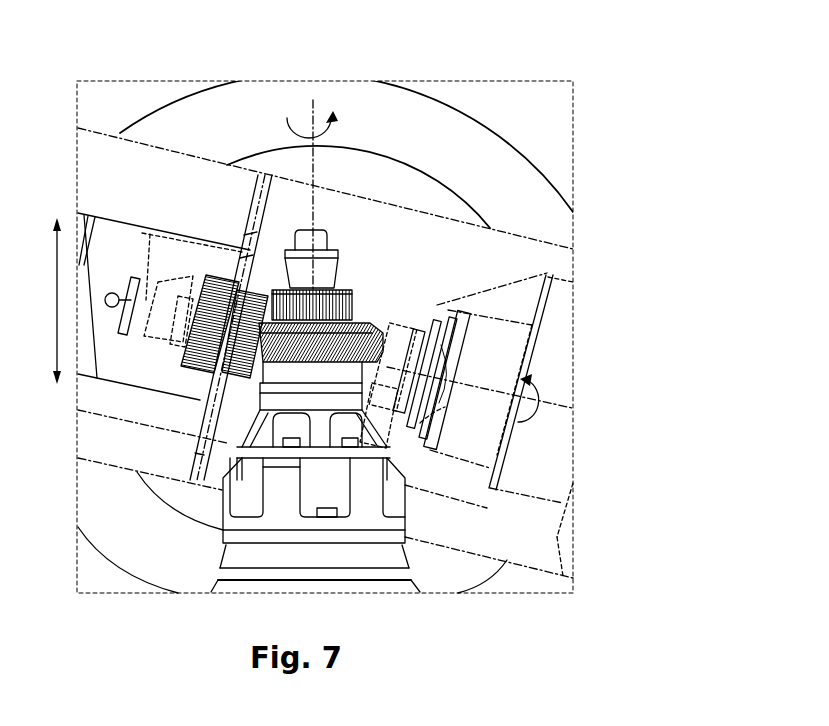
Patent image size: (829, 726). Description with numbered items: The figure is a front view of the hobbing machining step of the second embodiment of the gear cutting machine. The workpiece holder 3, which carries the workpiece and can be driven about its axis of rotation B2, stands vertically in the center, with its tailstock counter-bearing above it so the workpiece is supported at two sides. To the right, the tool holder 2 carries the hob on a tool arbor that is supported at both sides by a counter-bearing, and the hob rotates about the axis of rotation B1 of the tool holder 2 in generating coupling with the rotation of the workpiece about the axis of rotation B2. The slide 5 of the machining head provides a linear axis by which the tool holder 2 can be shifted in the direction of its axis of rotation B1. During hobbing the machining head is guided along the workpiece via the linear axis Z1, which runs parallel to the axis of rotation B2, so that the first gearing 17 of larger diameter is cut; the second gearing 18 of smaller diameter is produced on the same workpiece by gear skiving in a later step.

The second gearing 18 is at (327, 300).
The first gearing 17 is at (585, 497).
The workpiece holder 3 is at (323, 403).
The slide 5 is at (362, 213).
The tool holder 2 is at (435, 343).
The linear axis Z1 is at (36, 301).
The axis of rotation of the tool holder B1 is at (545, 411).
The axis of rotation of the workpiece holder B2 is at (329, 195).